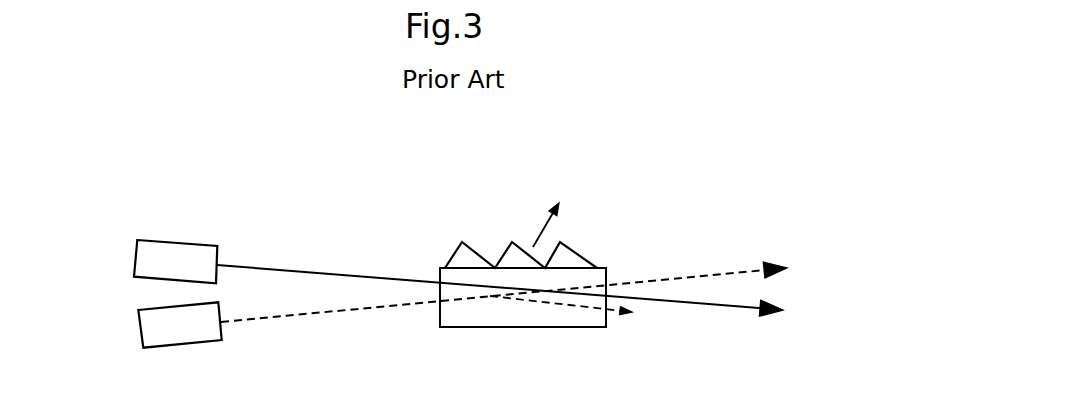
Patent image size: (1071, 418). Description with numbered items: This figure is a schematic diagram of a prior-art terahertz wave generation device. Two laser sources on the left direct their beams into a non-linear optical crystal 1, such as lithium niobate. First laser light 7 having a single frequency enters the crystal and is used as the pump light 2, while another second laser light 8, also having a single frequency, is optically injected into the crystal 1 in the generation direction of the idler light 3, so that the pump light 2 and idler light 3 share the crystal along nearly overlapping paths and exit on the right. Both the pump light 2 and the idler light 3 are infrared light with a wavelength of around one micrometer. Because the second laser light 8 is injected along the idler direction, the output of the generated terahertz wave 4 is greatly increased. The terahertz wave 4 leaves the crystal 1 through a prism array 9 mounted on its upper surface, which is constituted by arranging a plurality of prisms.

The non-linear optical crystal 1 is at (523, 318).
The pump light 2 is at (463, 300).
The idler light 3 is at (575, 308).
The terahertz wave 4 is at (557, 203).
The first laser light 7 is at (302, 315).
The second laser light 8 is at (300, 272).
The prism array 9 is at (460, 252).